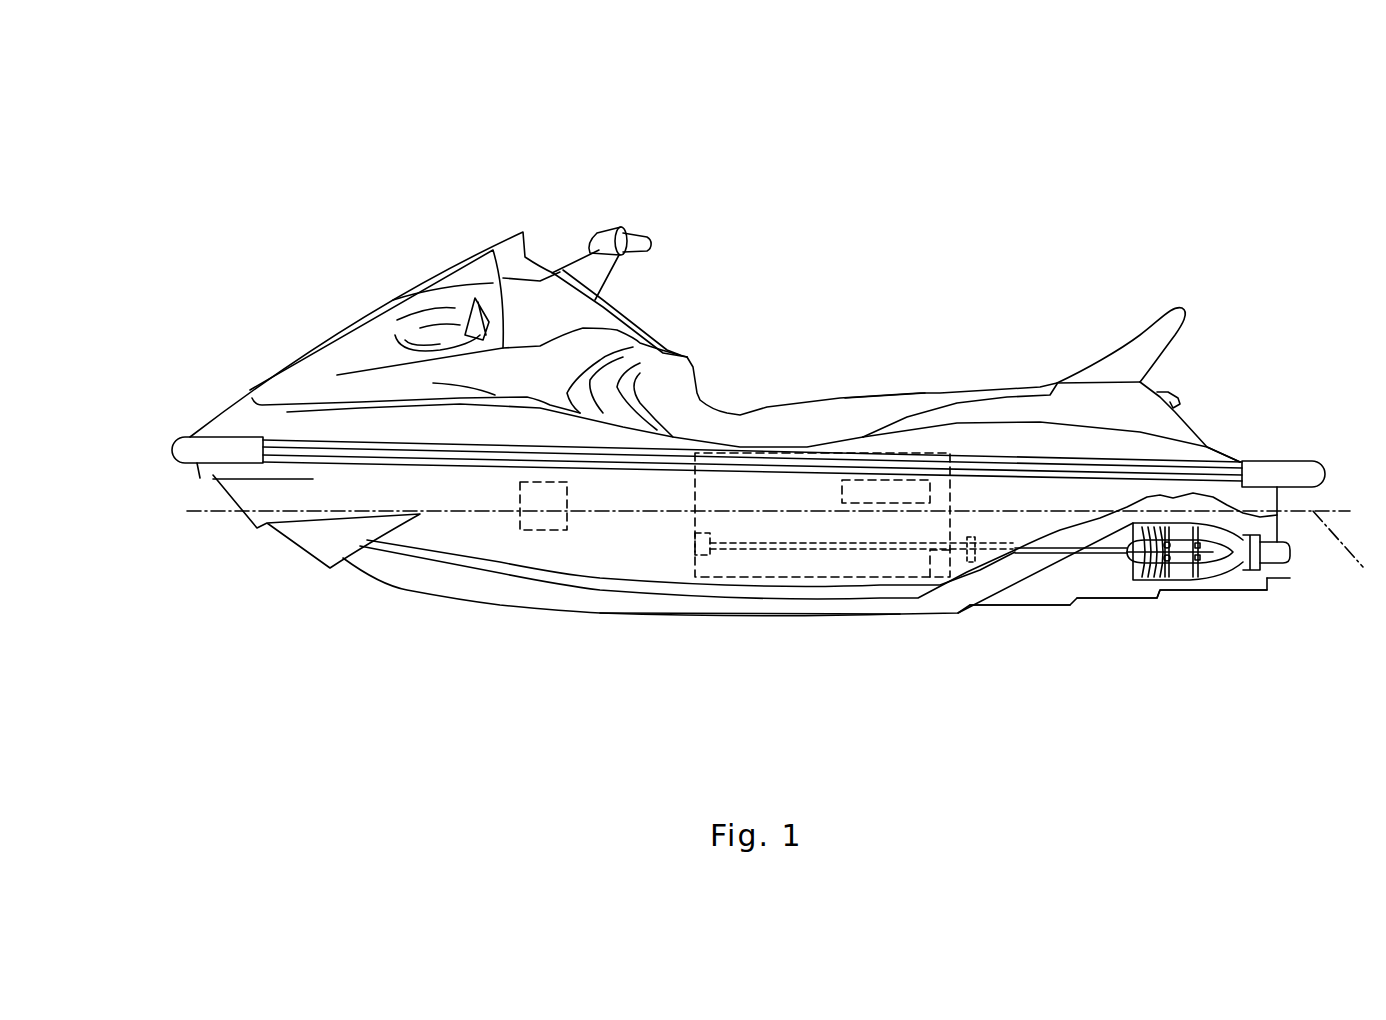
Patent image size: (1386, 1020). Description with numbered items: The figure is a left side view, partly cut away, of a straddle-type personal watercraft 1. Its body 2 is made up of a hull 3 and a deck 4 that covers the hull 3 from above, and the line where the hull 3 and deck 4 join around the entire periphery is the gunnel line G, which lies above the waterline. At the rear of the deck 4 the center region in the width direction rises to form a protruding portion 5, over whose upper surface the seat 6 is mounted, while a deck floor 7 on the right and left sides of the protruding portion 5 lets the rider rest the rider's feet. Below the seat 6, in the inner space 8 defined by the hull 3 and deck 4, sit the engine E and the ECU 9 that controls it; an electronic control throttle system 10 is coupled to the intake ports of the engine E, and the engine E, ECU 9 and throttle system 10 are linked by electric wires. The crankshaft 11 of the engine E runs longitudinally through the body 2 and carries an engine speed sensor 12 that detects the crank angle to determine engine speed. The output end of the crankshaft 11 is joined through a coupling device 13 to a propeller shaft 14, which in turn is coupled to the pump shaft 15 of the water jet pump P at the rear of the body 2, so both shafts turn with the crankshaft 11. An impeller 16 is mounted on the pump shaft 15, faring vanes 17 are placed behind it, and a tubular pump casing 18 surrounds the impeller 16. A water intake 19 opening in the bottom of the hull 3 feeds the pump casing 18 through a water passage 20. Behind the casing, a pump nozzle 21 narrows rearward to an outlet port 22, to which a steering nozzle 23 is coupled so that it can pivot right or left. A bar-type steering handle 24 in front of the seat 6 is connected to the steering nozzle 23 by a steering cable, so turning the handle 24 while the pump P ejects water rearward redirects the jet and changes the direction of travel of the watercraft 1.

The personal watercraft 1 is at (402, 190).
The body 2 is at (122, 410).
The hull 3 is at (245, 495).
The deck 4 is at (233, 422).
The protruding portion 5 is at (1008, 413).
The seat 6 is at (848, 400).
The deck floor 7 is at (960, 457).
The inner space 8 is at (607, 563).
The ECU 9 is at (532, 532).
The electronic control throttle system 10 is at (857, 503).
The crankshaft 11 is at (920, 585).
The engine speed sensor 12 is at (703, 557).
The coupling device 13 is at (975, 562).
The propeller shaft 14 is at (1023, 557).
The pump shaft 15 is at (1183, 577).
The impeller 16 is at (1127, 585).
The faring vanes 17 is at (1146, 582).
The pump casing 18 is at (1197, 525).
The water intake 19 is at (1057, 608).
The water passage 20 is at (1093, 583).
The pump nozzle 21 is at (1220, 578).
The outlet port 22 is at (1275, 577).
The steering nozzle 23 is at (1283, 575).
The steering handle 24 is at (640, 228).
The engine E is at (693, 512).
The water jet pump P is at (1190, 528).
The gunnel line G is at (1325, 473).